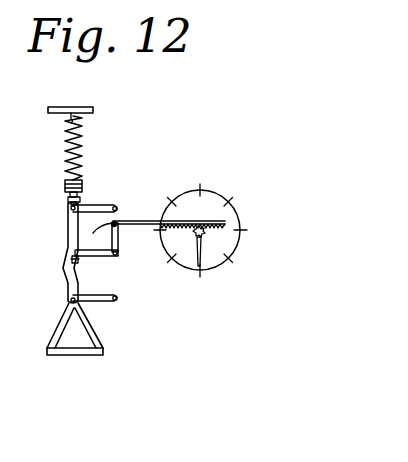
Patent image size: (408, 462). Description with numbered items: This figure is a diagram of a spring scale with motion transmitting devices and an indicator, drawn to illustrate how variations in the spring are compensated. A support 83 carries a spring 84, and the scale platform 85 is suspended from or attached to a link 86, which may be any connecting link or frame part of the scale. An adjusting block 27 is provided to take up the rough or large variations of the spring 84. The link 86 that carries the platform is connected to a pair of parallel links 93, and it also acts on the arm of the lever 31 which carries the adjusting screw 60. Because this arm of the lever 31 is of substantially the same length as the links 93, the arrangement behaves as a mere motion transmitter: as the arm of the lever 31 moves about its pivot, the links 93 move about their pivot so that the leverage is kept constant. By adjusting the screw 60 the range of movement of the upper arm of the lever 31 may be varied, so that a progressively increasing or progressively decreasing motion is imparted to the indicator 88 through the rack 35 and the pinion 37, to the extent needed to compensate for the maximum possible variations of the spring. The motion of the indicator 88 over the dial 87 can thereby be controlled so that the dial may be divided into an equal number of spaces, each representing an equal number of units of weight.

The support 83 is at (89, 108).
The spring 84 is at (77, 149).
The adjusting block 27 is at (65, 188).
The link 86 is at (68, 223).
The parallel links 93 is at (97, 206).
The lever 31 is at (115, 243).
The adjusting screw 60 is at (78, 261).
The scale platform 85 is at (85, 355).
The rack 35 is at (193, 222).
The dial 87 is at (185, 272).
The indicator 88 is at (203, 256).
The pinion 37 is at (193, 232).